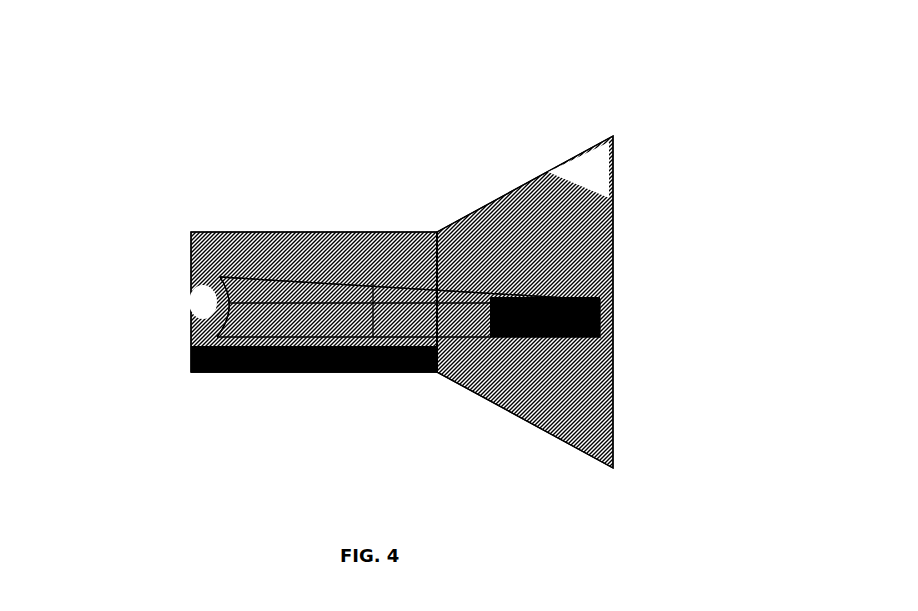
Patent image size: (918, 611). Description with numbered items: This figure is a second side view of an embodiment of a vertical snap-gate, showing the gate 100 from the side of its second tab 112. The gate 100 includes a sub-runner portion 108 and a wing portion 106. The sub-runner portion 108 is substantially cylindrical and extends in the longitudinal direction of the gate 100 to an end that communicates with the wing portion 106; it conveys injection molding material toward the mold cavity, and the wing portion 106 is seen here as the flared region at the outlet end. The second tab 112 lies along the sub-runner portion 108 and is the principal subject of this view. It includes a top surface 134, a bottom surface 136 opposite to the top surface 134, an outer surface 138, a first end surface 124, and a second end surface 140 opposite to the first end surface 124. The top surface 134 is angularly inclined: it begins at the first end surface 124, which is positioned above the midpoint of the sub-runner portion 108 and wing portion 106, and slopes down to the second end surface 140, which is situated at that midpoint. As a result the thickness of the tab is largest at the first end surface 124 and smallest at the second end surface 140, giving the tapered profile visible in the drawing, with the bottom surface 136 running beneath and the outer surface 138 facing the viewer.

The gate 100 is at (203, 115).
The wing portion 106 is at (510, 378).
The sub-runner portion 108 is at (343, 255).
The second tab 112 is at (332, 315).
The first end surface 124 is at (230, 307).
The top surface 134 is at (387, 283).
The bottom surface 136 is at (399, 340).
The outer surface 138 is at (267, 317).
The second end surface 140 is at (603, 315).